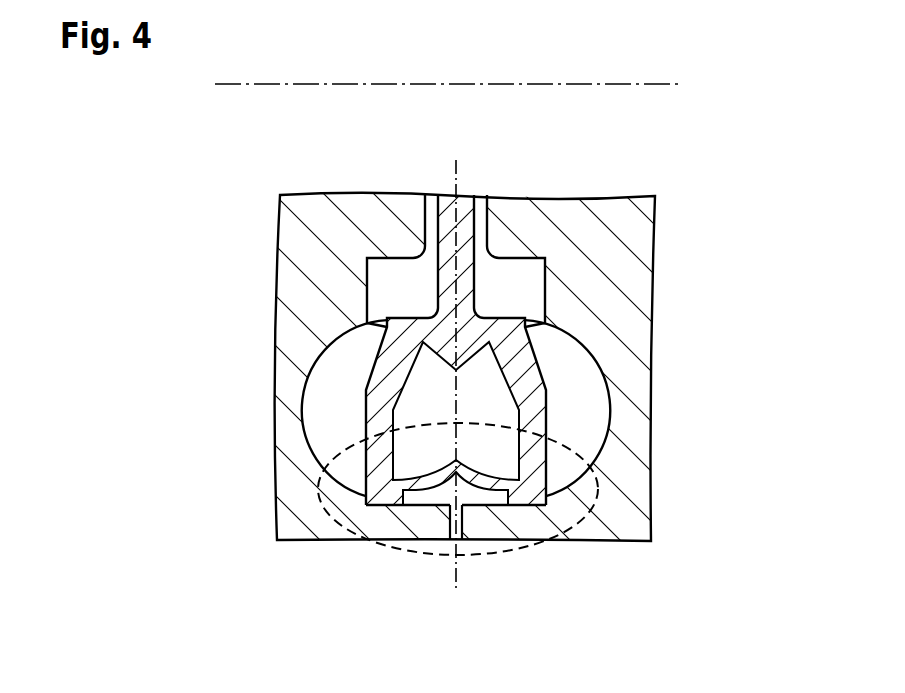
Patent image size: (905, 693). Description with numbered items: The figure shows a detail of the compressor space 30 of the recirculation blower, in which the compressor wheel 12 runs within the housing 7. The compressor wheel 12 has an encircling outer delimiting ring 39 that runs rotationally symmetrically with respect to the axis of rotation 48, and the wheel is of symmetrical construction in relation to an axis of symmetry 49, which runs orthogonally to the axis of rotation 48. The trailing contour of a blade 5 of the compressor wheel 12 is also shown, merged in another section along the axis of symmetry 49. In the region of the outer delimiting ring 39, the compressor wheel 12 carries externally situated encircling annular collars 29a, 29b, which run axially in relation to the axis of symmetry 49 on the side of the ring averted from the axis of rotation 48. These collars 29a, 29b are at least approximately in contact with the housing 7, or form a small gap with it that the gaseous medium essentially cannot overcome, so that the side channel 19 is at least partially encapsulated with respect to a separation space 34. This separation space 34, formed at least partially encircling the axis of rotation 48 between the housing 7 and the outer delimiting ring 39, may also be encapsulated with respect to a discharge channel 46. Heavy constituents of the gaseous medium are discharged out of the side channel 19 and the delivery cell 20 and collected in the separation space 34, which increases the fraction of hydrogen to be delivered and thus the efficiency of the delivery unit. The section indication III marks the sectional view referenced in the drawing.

The blade 5 is at (381, 357).
The housing 7 is at (331, 206).
The compressor wheel 12 is at (466, 206).
The side channel 19 is at (316, 423).
The delivery cell 20 is at (490, 365).
The externally situated encircling annular collar 29a is at (374, 492).
The externally situated encircling annular collar 29b is at (538, 489).
The compressor space 30 is at (697, 139).
The separation space 34 is at (487, 484).
The outer delimiting ring 39 is at (428, 500).
The discharge channel 46 is at (472, 538).
The axis of rotation 48 is at (427, 80).
The axis of symmetry 49 is at (452, 190).
The section line III is at (378, 550).